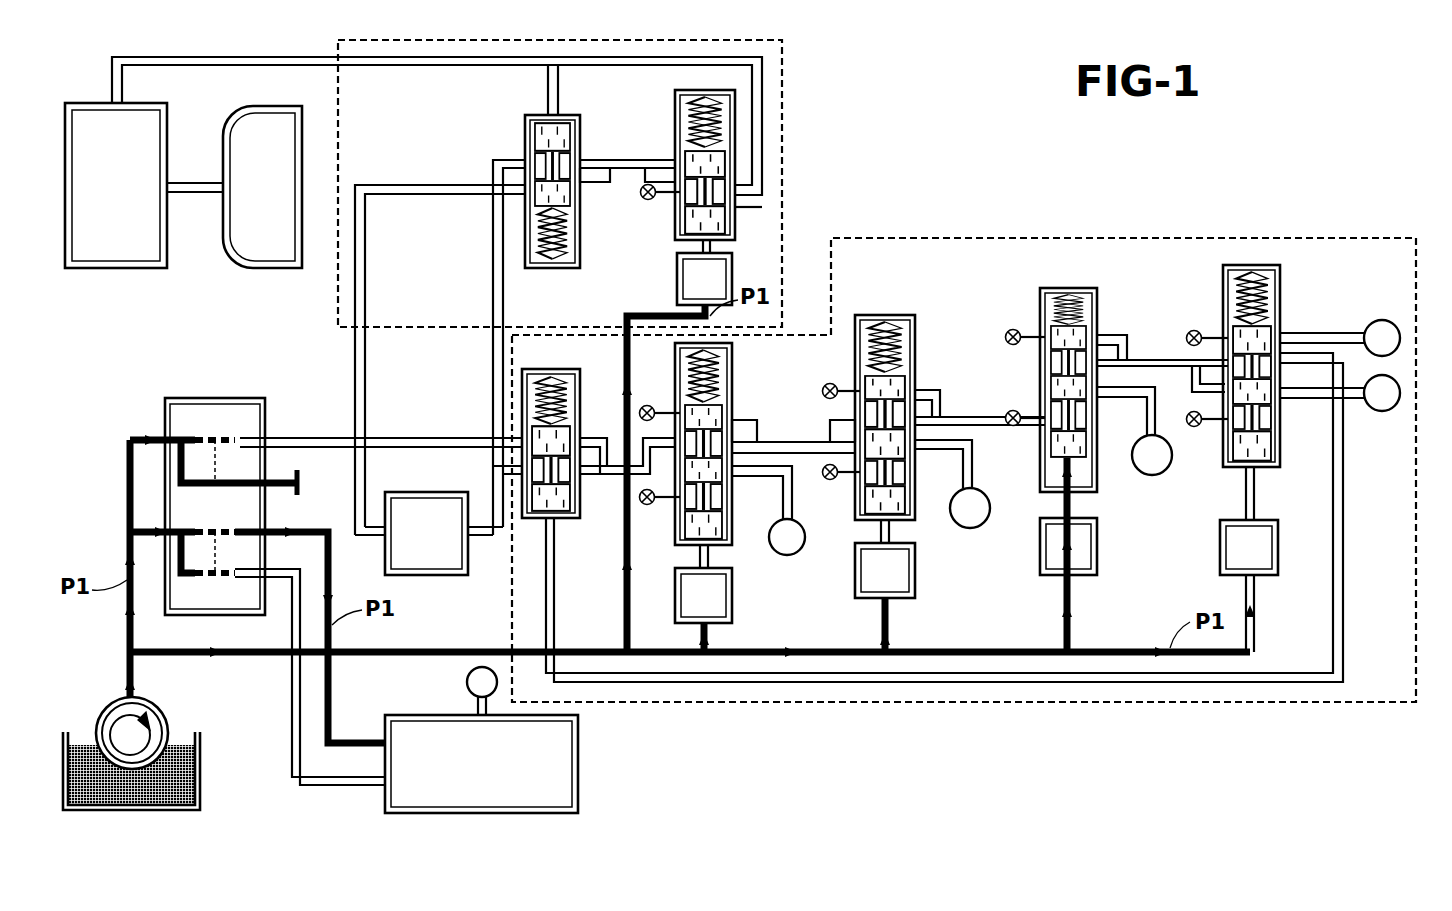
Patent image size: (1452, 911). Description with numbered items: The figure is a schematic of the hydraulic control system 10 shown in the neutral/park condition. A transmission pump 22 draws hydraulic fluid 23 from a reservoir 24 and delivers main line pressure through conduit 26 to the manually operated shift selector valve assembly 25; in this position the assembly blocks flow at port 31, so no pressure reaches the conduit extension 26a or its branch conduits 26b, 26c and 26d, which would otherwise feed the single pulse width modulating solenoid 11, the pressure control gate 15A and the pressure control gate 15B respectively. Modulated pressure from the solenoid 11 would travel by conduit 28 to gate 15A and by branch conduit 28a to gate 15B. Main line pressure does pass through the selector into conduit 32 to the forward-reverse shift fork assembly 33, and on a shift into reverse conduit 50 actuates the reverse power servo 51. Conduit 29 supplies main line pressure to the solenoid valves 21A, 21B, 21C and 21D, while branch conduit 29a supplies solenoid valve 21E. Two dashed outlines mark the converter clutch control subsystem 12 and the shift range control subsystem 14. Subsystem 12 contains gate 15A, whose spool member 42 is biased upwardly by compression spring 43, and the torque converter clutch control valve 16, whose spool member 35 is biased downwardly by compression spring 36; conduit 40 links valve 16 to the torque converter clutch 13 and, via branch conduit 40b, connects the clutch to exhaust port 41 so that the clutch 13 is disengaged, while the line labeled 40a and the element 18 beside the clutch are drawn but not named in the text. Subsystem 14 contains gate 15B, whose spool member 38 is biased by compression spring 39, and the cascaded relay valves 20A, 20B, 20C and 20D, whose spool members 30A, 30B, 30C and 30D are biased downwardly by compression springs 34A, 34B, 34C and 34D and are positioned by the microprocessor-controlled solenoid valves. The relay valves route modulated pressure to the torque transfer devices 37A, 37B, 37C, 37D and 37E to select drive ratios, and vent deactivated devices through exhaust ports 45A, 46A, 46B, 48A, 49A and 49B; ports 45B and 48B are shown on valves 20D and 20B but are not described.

The hydraulic control system 10 is at (897, 80).
The pulse width modulating solenoid 11 is at (437, 577).
The converter clutch control subsystem 12 is at (790, 152).
The torque converter clutch 13 is at (112, 270).
The shift range control subsystem 14 is at (1258, 232).
The pressure control gate 15A is at (532, 217).
The pressure control gate 15B is at (519, 431).
The torque converter clutch control valve 16 is at (725, 175).
The cooler 18 is at (268, 270).
The relay valve 20A is at (738, 468).
The relay valve 20B is at (913, 397).
The relay valve 20C is at (1096, 385).
The relay valve 20D is at (1256, 382).
The solenoid valve 21A is at (732, 602).
The solenoid valve 21B is at (915, 590).
The solenoid valve 21C is at (1097, 545).
The solenoid valve 21D is at (1278, 578).
The solenoid valve 21E is at (677, 283).
The transmission pump 22 is at (115, 700).
The hydraulic fluid 23 is at (180, 753).
The reservoir 24 is at (203, 790).
The shift selector valve assembly 25 is at (160, 395).
The conduit 26 is at (128, 465).
The conduit extension 26a is at (310, 437).
The first branch conduit 26b is at (365, 500).
The second branch conduit 26c is at (362, 275).
The third branch conduit 26d is at (462, 440).
The conduit 28 is at (493, 292).
The branch conduit 28a is at (505, 466).
The conduit 29 is at (482, 645).
The branch conduit 29a is at (622, 630).
The spool member 30A is at (715, 410).
The spool member 30B is at (895, 378).
The spool member 30C is at (1092, 452).
The spool member 30D is at (1275, 455).
The port 31 is at (300, 492).
The conduit 32 is at (332, 698).
The forward-reverse shift fork assembly 33 is at (528, 815).
The compression spring 34A is at (712, 375).
The compression spring 34B is at (890, 330).
The compression spring 34C is at (1080, 306).
The compression spring 34D is at (1265, 282).
The spool member 35 is at (680, 232).
The compression spring 36 is at (695, 108).
The torque transfer device 37A is at (1380, 320).
The torque transfer device 37B is at (1382, 411).
The torque transfer device 37C is at (1170, 468).
The torque transfer device 37D is at (982, 526).
The torque transfer device 37E is at (805, 536).
The spool member 38 is at (572, 512).
The compression spring 39 is at (540, 405).
The conduit 40 is at (418, 58).
The line 40a is at (548, 98).
The branch conduit 40b is at (782, 207).
The exhaust port 41 is at (644, 202).
The spool member 42 is at (567, 142).
The compression spring 43 is at (553, 260).
The exhaust port 45A is at (1192, 330).
The orifice 45B is at (1188, 410).
The exhaust port 46A is at (1008, 328).
The exhaust port 46B is at (1010, 428).
The exhaust port 48A is at (826, 383).
The orifice 48B is at (826, 464).
The exhaust port 49A is at (620, 420).
The exhaust port 49B is at (642, 510).
The conduit 50 is at (292, 728).
The reverse power servo 51 is at (467, 684).